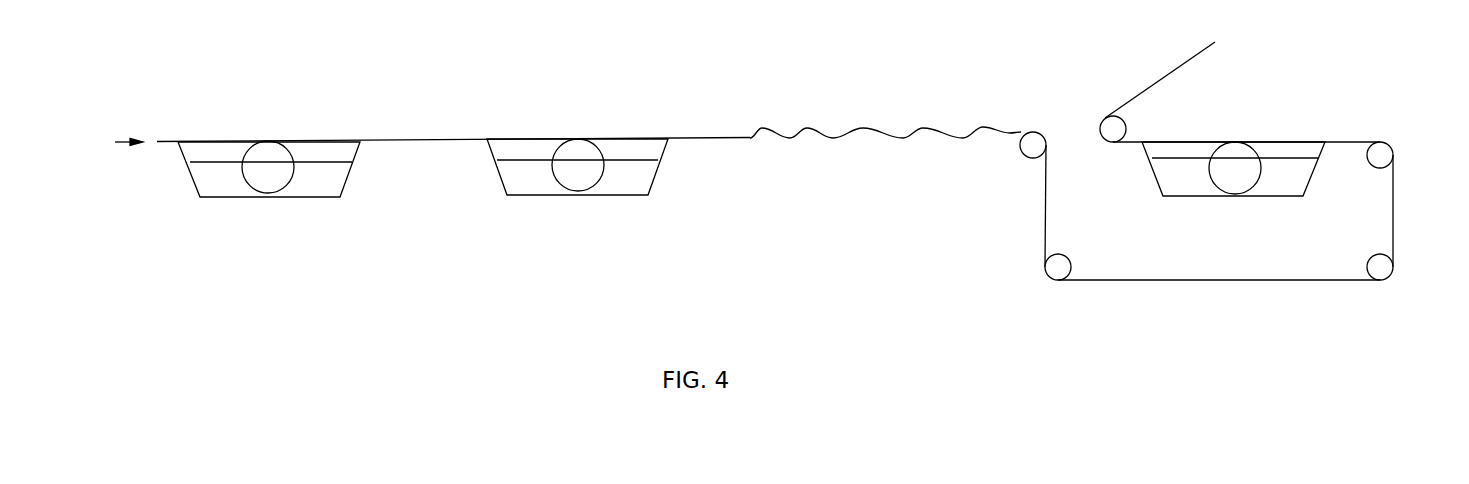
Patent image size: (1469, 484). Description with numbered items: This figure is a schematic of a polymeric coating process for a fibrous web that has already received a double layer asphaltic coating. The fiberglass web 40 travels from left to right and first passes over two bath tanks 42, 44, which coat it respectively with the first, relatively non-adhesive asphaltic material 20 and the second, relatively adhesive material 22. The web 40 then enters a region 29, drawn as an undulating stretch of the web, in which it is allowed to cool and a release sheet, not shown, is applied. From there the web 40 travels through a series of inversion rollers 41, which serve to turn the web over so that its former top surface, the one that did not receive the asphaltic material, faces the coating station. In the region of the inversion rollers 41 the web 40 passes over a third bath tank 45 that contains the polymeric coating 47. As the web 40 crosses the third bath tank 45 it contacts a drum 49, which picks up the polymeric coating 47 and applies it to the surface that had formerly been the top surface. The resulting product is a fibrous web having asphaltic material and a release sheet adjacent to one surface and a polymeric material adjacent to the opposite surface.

The first, relatively non-adhesive asphaltic material 20 is at (300, 190).
The second, relatively adhesive material 22 is at (545, 188).
The region 29 is at (1017, 123).
The fiberglass web 40 is at (410, 138).
The inversion rollers 41 is at (1047, 268).
The bath tank 42 is at (355, 166).
The bath tank 44 is at (660, 161).
The third bath tank 45 is at (1307, 182).
The polymeric coating 47 is at (1178, 187).
The drum 49 is at (1237, 148).